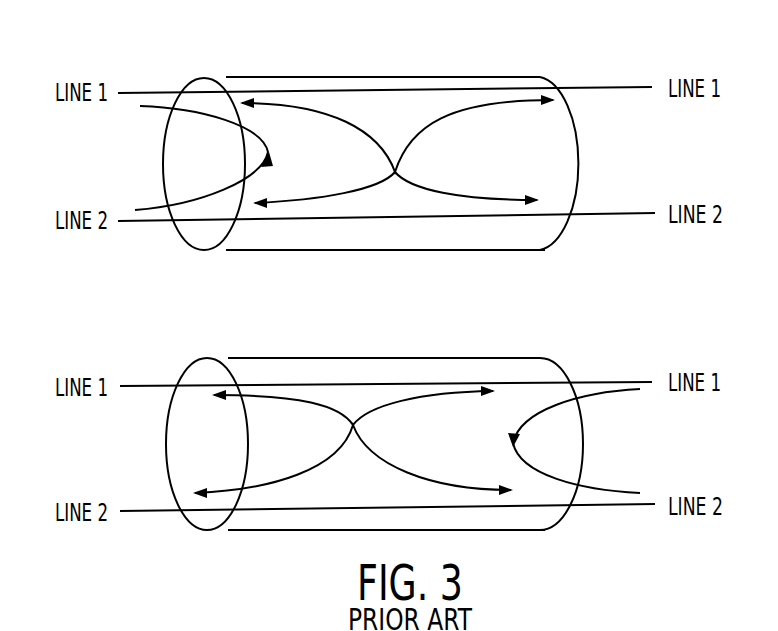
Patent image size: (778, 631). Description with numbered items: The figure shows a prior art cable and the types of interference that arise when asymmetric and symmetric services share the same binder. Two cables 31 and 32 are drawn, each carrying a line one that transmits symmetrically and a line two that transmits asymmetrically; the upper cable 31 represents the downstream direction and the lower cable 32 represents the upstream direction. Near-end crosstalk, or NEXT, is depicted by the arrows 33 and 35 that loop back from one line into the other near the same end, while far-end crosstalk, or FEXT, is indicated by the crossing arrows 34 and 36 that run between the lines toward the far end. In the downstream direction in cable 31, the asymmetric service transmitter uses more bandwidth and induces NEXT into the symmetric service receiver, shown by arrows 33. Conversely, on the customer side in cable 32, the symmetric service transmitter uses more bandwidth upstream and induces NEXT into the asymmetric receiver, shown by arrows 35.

The cable 31 is at (485, 76).
The cable 32 is at (465, 356).
The NEXT interference arrows 33 is at (263, 140).
The FEXT interference arrows 34 is at (482, 107).
The NEXT interference arrows 35 is at (517, 422).
The FEXT interference arrows 36 is at (350, 428).